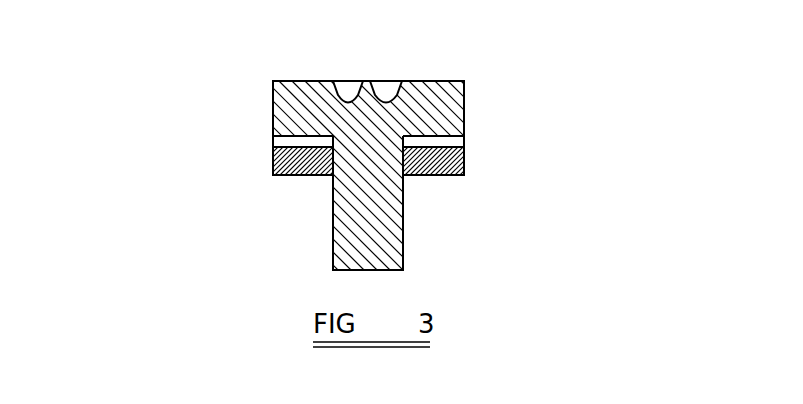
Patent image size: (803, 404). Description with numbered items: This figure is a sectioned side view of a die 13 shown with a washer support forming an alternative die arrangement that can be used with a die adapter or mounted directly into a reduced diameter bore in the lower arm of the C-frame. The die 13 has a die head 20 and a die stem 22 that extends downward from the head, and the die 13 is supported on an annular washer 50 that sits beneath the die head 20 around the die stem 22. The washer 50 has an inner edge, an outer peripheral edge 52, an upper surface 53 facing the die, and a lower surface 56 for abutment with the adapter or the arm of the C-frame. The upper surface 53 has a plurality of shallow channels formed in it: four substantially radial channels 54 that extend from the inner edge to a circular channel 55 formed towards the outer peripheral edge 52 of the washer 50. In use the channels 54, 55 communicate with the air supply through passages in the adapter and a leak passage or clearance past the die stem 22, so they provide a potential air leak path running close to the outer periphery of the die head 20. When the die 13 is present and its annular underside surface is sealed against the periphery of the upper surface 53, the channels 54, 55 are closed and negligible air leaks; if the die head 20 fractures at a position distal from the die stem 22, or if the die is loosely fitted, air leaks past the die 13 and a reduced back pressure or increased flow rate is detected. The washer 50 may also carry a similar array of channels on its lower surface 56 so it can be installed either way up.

The die 13 is at (262, 98).
The die head 20 is at (445, 85).
The die stem 22 is at (383, 242).
The annular washer 50 is at (448, 160).
The outer peripheral edge 52 is at (273, 160).
The upper surface 53 is at (423, 142).
The radial channels 54 is at (280, 141).
The circular channel 55 is at (463, 138).
The lower surface 56 is at (303, 176).